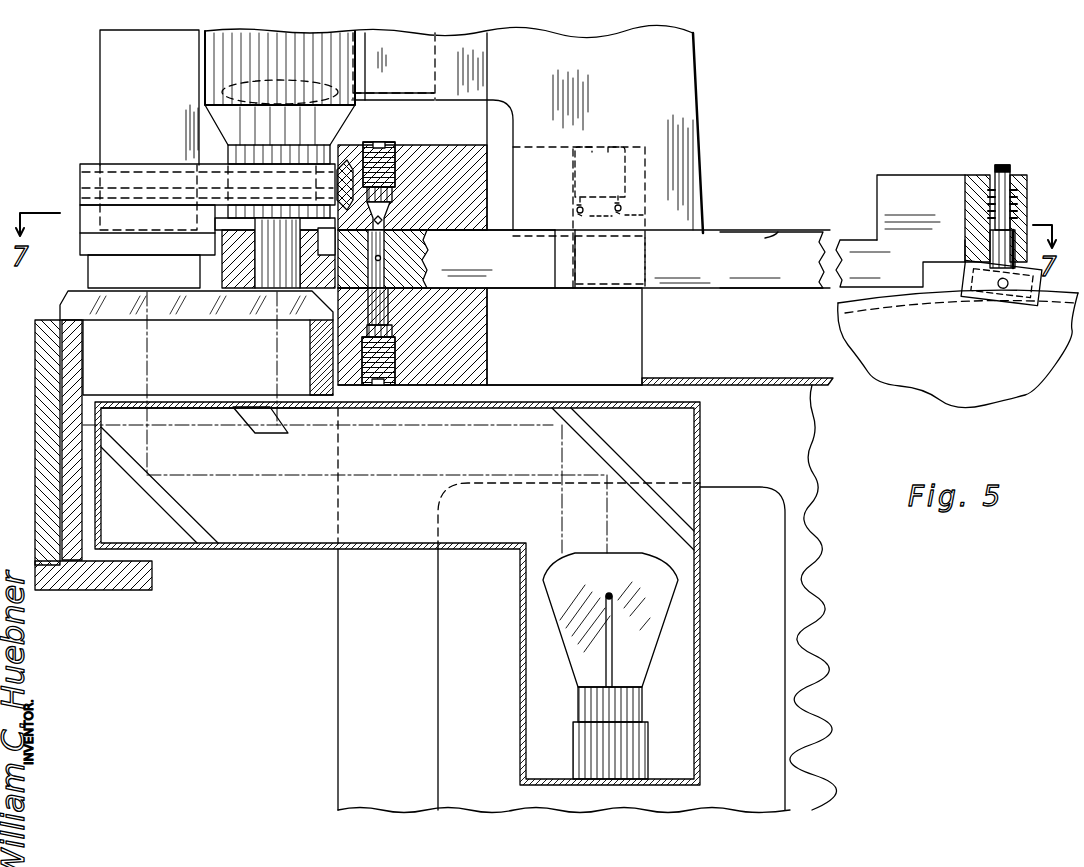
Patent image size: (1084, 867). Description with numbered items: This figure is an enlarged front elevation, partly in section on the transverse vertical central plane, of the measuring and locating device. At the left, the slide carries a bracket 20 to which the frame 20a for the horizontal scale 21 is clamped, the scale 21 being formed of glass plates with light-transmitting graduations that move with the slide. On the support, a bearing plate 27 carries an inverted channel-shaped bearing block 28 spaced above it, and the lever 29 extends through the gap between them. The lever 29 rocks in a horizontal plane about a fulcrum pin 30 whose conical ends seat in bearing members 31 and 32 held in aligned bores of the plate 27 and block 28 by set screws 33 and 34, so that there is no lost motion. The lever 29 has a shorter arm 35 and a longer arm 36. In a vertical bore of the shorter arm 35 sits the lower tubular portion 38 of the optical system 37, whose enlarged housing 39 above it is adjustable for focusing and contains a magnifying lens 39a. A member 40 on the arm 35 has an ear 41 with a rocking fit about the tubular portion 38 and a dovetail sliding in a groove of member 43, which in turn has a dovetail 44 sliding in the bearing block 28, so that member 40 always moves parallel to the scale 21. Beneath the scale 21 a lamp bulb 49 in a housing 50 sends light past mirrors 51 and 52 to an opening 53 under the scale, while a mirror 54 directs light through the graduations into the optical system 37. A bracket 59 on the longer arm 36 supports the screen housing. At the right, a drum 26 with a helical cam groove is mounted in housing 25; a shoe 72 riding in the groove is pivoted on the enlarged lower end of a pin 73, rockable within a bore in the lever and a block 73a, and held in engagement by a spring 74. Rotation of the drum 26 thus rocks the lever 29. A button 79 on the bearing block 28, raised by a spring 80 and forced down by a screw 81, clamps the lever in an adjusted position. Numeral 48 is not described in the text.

The supporting means or bracket 20 is at (35, 492).
The frame or mounting means 20a is at (60, 321).
The scale or graduated member 21 is at (67, 300).
The housing 25 is at (817, 453).
The drum 26 is at (985, 385).
The bearing plate 27 is at (487, 342).
The bearing block 28 is at (464, 156).
The lever 29 is at (513, 288).
The fulcrum pin 30 is at (428, 254).
The bearing member 31 is at (388, 316).
The bearing member 32 is at (390, 213).
The set screw 33 is at (395, 363).
The set screw 34 is at (395, 169).
The shorter arm 35 is at (88, 268).
The longer arm 36 is at (806, 233).
The optical system 37 is at (226, 152).
The lower tubular portion 38 is at (262, 290).
The enlarged housing 39 is at (213, 46).
The lens 39a is at (225, 96).
The member 40 is at (80, 232).
The ear or portion 41 is at (326, 241).
The member 43 is at (80, 183).
The dovetail 44 is at (345, 160).
The lens hood 48 is at (110, 117).
The lamp bulb 49 is at (665, 612).
The housing 50 is at (703, 441).
The mirror 51 is at (645, 450).
The mirror 52 is at (180, 517).
The opening 53 is at (194, 409).
The mirror 54 is at (268, 430).
The bracket 59 is at (705, 88).
The shoe or follower 72 is at (1042, 286).
The pin 73 is at (1000, 250).
The block 73a is at (878, 192).
The spring 74 is at (1015, 211).
The button 79 is at (573, 214).
The spring 80 is at (628, 212).
The screw 81 is at (616, 147).